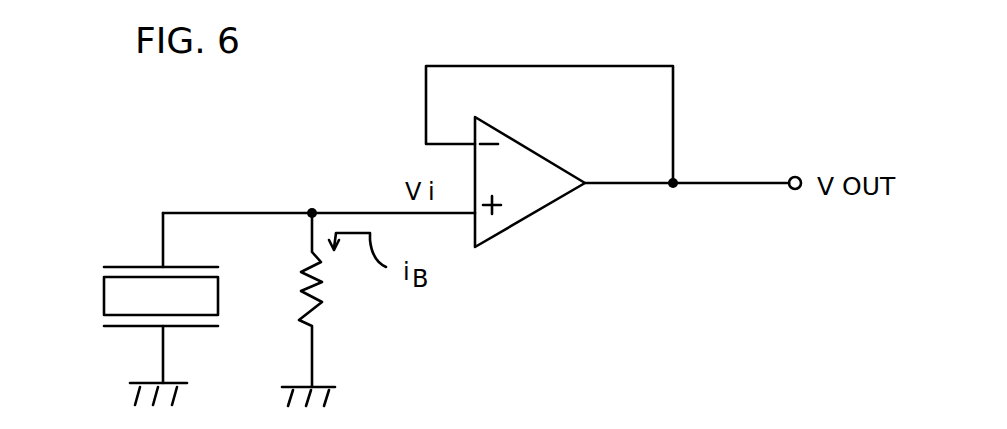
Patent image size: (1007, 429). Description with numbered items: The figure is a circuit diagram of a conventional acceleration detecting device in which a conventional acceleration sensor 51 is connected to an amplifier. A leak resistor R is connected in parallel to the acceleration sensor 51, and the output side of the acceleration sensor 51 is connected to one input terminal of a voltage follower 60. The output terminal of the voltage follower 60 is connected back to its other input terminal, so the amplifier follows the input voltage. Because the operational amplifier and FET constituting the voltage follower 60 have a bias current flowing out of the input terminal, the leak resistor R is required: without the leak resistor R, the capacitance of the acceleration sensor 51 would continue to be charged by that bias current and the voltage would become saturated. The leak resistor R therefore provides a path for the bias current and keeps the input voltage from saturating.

The acceleration sensor 51 is at (112, 257).
The voltage follower 60 is at (528, 217).
The leak resistor R is at (320, 307).